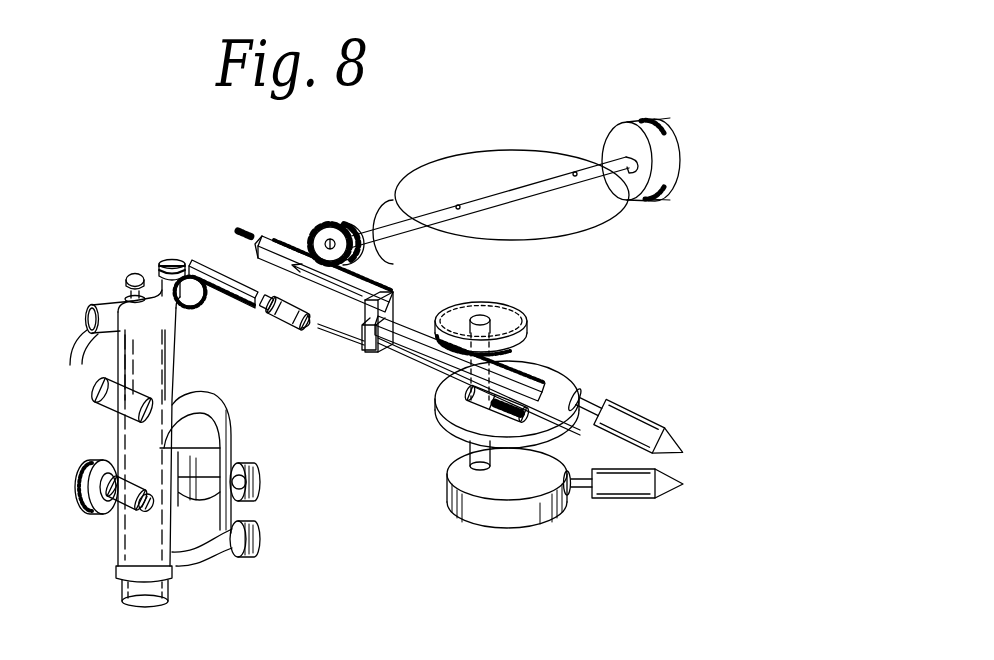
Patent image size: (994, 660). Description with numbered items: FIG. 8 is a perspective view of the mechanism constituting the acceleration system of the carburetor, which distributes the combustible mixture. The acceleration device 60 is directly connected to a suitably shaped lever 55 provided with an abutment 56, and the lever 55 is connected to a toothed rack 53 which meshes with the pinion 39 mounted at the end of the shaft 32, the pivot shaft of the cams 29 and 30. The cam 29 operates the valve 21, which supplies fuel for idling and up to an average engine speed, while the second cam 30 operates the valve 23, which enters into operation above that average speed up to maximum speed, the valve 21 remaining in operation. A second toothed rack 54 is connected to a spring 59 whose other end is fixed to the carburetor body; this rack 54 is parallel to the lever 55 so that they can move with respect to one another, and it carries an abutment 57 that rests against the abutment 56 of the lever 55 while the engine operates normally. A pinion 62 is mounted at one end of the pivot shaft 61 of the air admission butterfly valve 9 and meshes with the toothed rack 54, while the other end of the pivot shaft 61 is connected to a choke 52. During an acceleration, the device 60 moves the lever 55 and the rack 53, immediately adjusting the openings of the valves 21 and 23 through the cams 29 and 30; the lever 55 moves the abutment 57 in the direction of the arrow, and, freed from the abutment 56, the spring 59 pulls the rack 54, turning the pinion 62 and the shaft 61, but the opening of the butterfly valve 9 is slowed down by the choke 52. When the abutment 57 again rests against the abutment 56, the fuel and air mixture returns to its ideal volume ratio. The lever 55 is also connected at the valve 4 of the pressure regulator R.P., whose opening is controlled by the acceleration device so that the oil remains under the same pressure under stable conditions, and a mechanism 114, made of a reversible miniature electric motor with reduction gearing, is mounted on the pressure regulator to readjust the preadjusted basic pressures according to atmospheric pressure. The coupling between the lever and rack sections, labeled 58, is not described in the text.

The valve 4 is at (188, 312).
The air admission butterfly valve 9 is at (536, 165).
The valve 21 is at (650, 408).
The valve 23 is at (640, 511).
The cam 29 is at (460, 414).
The second cam 30 is at (447, 494).
The shaft 32 is at (481, 316).
The pinion 39 is at (505, 320).
The choke 52 is at (673, 122).
The toothed rack 53 is at (522, 366).
The second toothed rack 54 is at (282, 245).
The lever 55 is at (314, 337).
The abutment 56 is at (362, 340).
The abutment 57 is at (388, 304).
The coupling 58 is at (284, 326).
The spring 59 is at (246, 228).
The acceleration device 60 is at (548, 398).
The pivot shaft 61 is at (622, 162).
The pinion 62 is at (336, 222).
The mechanism 114 is at (98, 462).
The pressure regulator R.P. is at (238, 457).